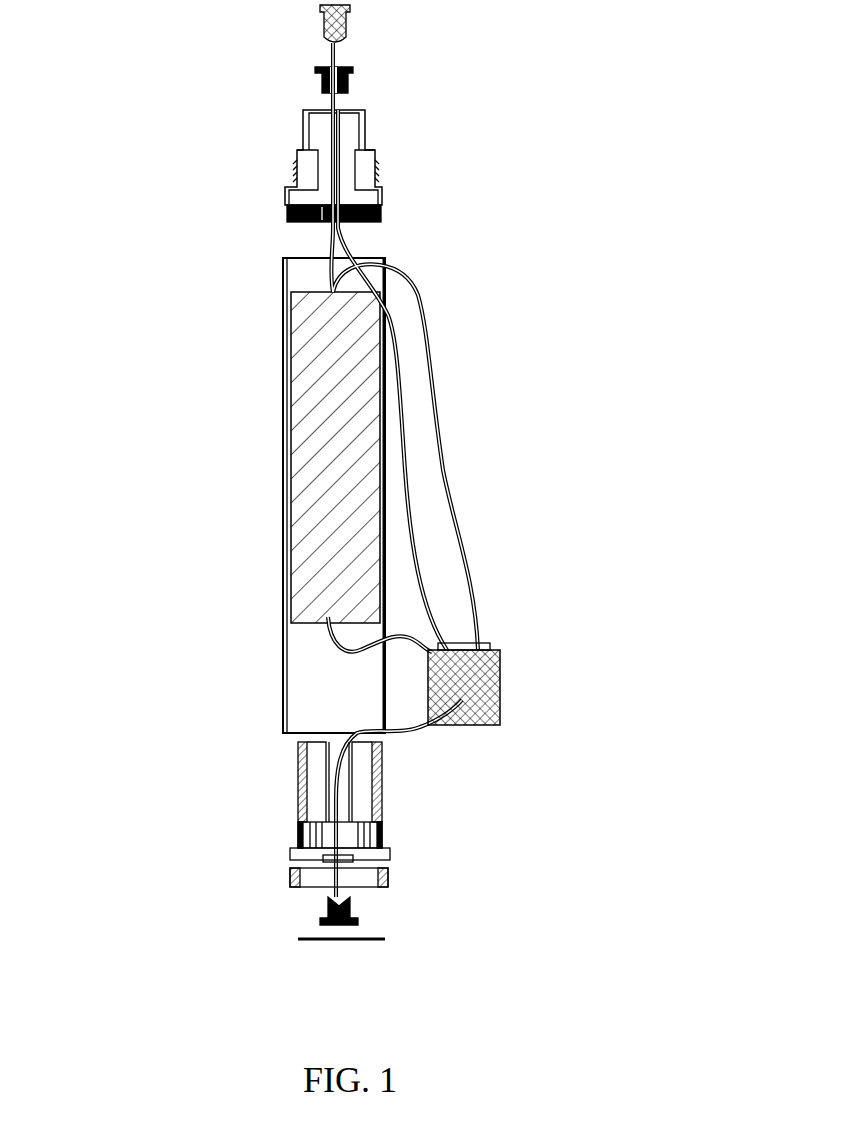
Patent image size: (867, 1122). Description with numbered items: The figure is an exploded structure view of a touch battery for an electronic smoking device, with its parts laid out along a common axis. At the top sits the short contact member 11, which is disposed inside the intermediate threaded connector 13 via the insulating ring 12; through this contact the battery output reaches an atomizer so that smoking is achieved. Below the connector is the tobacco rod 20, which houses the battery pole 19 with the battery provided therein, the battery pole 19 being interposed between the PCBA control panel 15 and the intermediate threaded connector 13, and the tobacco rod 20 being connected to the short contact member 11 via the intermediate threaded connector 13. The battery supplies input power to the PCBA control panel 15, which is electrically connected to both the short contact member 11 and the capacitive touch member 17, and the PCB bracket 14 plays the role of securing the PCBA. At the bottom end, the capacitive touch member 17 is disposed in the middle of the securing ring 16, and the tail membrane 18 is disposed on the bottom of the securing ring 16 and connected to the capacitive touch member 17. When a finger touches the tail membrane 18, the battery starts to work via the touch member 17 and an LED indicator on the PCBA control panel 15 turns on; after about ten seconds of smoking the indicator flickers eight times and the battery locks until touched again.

The short contact member 11 is at (393, 22).
The insulating ring 12 is at (393, 80).
The intermediate threaded connector 13 is at (410, 163).
The PCB bracket 14 is at (407, 813).
The PCBA control panel 15 is at (520, 688).
The securing ring 16 is at (267, 878).
The capacitive touch member 17 is at (383, 910).
The tail membrane 18 is at (272, 938).
The battery pole 19 is at (310, 448).
The tobacco rod 20 is at (283, 675).